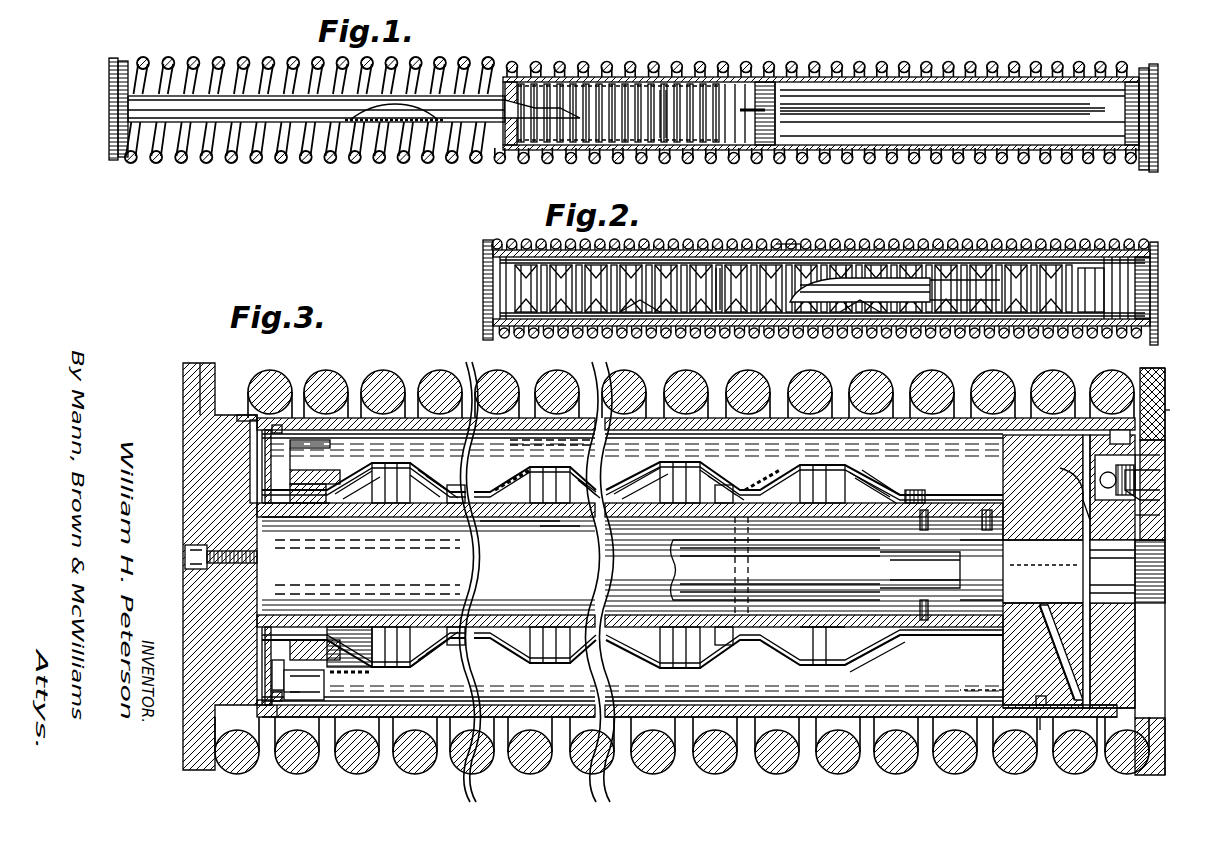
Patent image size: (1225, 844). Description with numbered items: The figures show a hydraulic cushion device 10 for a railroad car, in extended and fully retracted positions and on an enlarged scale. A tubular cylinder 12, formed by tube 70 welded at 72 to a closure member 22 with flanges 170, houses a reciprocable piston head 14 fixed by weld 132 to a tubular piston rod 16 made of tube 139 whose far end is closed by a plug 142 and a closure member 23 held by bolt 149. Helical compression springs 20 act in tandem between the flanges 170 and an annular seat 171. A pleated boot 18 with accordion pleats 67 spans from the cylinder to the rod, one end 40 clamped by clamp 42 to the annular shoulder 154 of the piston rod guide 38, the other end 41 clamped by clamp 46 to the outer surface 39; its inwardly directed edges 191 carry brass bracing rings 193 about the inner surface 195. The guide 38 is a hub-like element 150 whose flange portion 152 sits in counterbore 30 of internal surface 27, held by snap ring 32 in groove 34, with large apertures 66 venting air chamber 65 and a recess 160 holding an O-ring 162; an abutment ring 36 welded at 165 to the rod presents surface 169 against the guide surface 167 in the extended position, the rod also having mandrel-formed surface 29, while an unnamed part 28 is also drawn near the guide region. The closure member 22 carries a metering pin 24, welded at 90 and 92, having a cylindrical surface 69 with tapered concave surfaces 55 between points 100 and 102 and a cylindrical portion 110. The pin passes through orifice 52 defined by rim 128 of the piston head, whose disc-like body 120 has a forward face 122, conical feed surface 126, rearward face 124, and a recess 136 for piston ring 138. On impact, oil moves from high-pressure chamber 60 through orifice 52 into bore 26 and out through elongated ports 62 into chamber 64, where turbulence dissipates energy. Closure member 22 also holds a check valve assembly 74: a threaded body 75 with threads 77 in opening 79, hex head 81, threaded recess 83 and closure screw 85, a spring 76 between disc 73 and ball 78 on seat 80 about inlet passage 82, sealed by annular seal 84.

In FIG. 1, the cushion device 10 is at (326, 170).
In FIG. 2, the cushion device 10 is at (1052, 240).
In FIG. 3, the cushion device 10 is at (446, 360).
In FIG. 1, the tubular cylinder 12 is at (1008, 77).
In FIG. 3, the tubular cylinder 12 is at (952, 418).
In FIG. 1, the piston head 14 is at (800, 80).
In FIG. 3, the piston head 14 is at (1020, 440).
In FIG. 1, the tubular piston rod 16 is at (470, 96).
In FIG. 3, the tubular piston rod 16 is at (768, 500).
In FIG. 1, the flexible tubular sealing member (boot) 18 is at (622, 84).
In FIG. 2, the flexible tubular sealing member (boot) 18 is at (656, 272).
In FIG. 3, the flexible tubular sealing member (boot) 18 is at (545, 450).
In FIG. 1, the helical compression springs 20 is at (274, 60).
In FIG. 2, the helical compression springs 20 is at (962, 242).
In FIG. 3, the helical compression springs 20 is at (886, 380).
In FIG. 1, the closure member of tubular cylinder 22 is at (1158, 62).
In FIG. 3, the closure member of tubular cylinder 22 is at (1120, 768).
In FIG. 1, the closure member of tubular piston rod 23 is at (121, 56).
In FIG. 3, the closure member of tubular piston rod 23 is at (182, 380).
In FIG. 1, the metering pin 24 is at (992, 126).
In FIG. 2, the metering pin 24 is at (866, 282).
In FIG. 3, the metering pin 24 is at (842, 630).
In FIG. 1, the bore of tubular piston rod 26 is at (395, 124).
In FIG. 2, the bore of tubular piston rod 26 is at (782, 240).
In FIG. 3, the bore of tubular piston rod 26 is at (376, 500).
In FIG. 3, the internal surface of tubular cylinder 27 is at (398, 418).
In FIG. 3, the retainer 28 is at (340, 455).
In FIG. 3, the surface of piston rod 29 is at (405, 624).
In FIG. 3, the counterbore 30 is at (290, 420).
In FIG. 3, the snap ring 32 is at (268, 416).
In FIG. 3, the annular groove 34 is at (257, 708).
In FIG. 3, the annular ring (abutment ring) 36 is at (562, 660).
In FIG. 3, the piston rod guide (tubular cylinder head member) 38 is at (330, 678).
In FIG. 3, the outer surface of tubular piston rod 39 is at (336, 632).
In FIG. 3, the end of tubular seal 40 is at (346, 478).
In FIG. 3, the other end of seal 41 is at (862, 490).
In FIG. 3, the clamp 42 is at (288, 680).
In FIG. 1, the clamp 46 is at (742, 92).
In FIG. 3, the clamp 46 is at (894, 494).
In FIG. 3, the orifice 52 is at (1068, 618).
In FIG. 1, the concave surfaces 55 is at (1100, 118).
In FIG. 3, the concave surfaces 55 is at (968, 530).
In FIG. 1, the chamber 60 is at (946, 96).
In FIG. 1, the ports (orifices) 62 is at (745, 122).
In FIG. 3, the ports (orifices) 62 is at (934, 520).
In FIG. 1, the chamber 64 is at (770, 84).
In FIG. 3, the chamber 64 is at (654, 440).
In FIG. 3, the chamber (space) 65 is at (450, 652).
In FIG. 3, the apertures 66 is at (306, 462).
In FIG. 1, the accordion type pleats 67 is at (700, 96).
In FIG. 2, the accordion type pleats 67 is at (716, 270).
In FIG. 3, the cylindrical surface of metering pin 69 is at (976, 520).
In FIG. 1, the tube 70 is at (1062, 78).
In FIG. 3, the tube 70 is at (770, 440).
In FIG. 2, the weld 72 is at (1142, 288).
In FIG. 3, the weld 72 is at (1122, 428).
In FIG. 3, the annular spring disc 73 is at (1084, 474).
In FIG. 3, the check valve assembly 74 is at (1152, 440).
In FIG. 3, the tubular body 75 is at (1160, 499).
In FIG. 2, the compression spring 76 is at (1091, 290).
In FIG. 3, the compression spring 76 is at (1086, 435).
In FIG. 2, the threads 77 is at (1116, 288).
In FIG. 3, the threads 77 is at (1108, 432).
In FIG. 3, the ball 78 is at (1160, 514).
In FIG. 3, the threaded opening 79 is at (1160, 545).
In FIG. 3, the valve seat 80 is at (1166, 420).
In FIG. 3, the hex-shaped head 81 is at (1158, 468).
In FIG. 3, the inlet passage 82 is at (1154, 454).
In FIG. 3, the threaded recess 83 is at (1160, 478).
In FIG. 3, the annular seal 84 is at (1166, 398).
In FIG. 3, the closure screw 85 is at (1158, 482).
In FIG. 3, the weld 90 is at (1086, 552).
In FIG. 3, the weld 92 is at (1160, 568).
In FIG. 3, the point on metering pin 100 is at (1010, 494).
In FIG. 3, the point on metering pin 102 is at (1012, 571).
In FIG. 3, the cylindrical surface portion 110 is at (1084, 502).
In FIG. 3, the disc-like body 120 is at (1006, 710).
In FIG. 3, the planar forward face 122 is at (1080, 690).
In FIG. 3, the planar rearward face 124 is at (1000, 688).
In FIG. 3, the conical feed surface 126 is at (1150, 652).
In FIG. 3, the rim (surface) 128 is at (1036, 542).
In FIG. 3, the weld 132 is at (1002, 636).
In FIG. 3, the annular recess 136 is at (1042, 684).
In FIG. 3, the piston ring 138 is at (1040, 716).
In FIG. 3, the tube 139 is at (430, 500).
In FIG. 3, the plug 142 is at (252, 490).
In FIG. 3, the bolt 149 is at (258, 557).
In FIG. 3, the hub-like element 150 is at (292, 692).
In FIG. 3, the flange portion 152 is at (243, 415).
In FIG. 3, the annular shoulder 154 is at (318, 430).
In FIG. 3, the recess 160 is at (275, 688).
In FIG. 3, the O-ring seal 162 is at (278, 706).
In FIG. 3, the weld 165 is at (552, 522).
In FIG. 3, the complementary surface 167 is at (330, 520).
In FIG. 3, the complementary surface 169 is at (510, 520).
In FIG. 1, the flanges 170 is at (114, 160).
In FIG. 2, the flanges 170 is at (489, 240).
In FIG. 3, the flanges 170 is at (214, 364).
In FIG. 1, the annular seat 171 is at (672, 78).
In FIG. 2, the annular seat 171 is at (846, 270).
In FIG. 2, the inwardly directed edges 191 is at (1002, 266).
In FIG. 3, the inwardly directed edges 191 is at (484, 484).
In FIG. 2, the bracing wear resisting rings 193 is at (860, 290).
In FIG. 3, the bracing wear resisting rings 193 is at (322, 462).
In FIG. 3, the inner surface of seal 195 is at (684, 470).